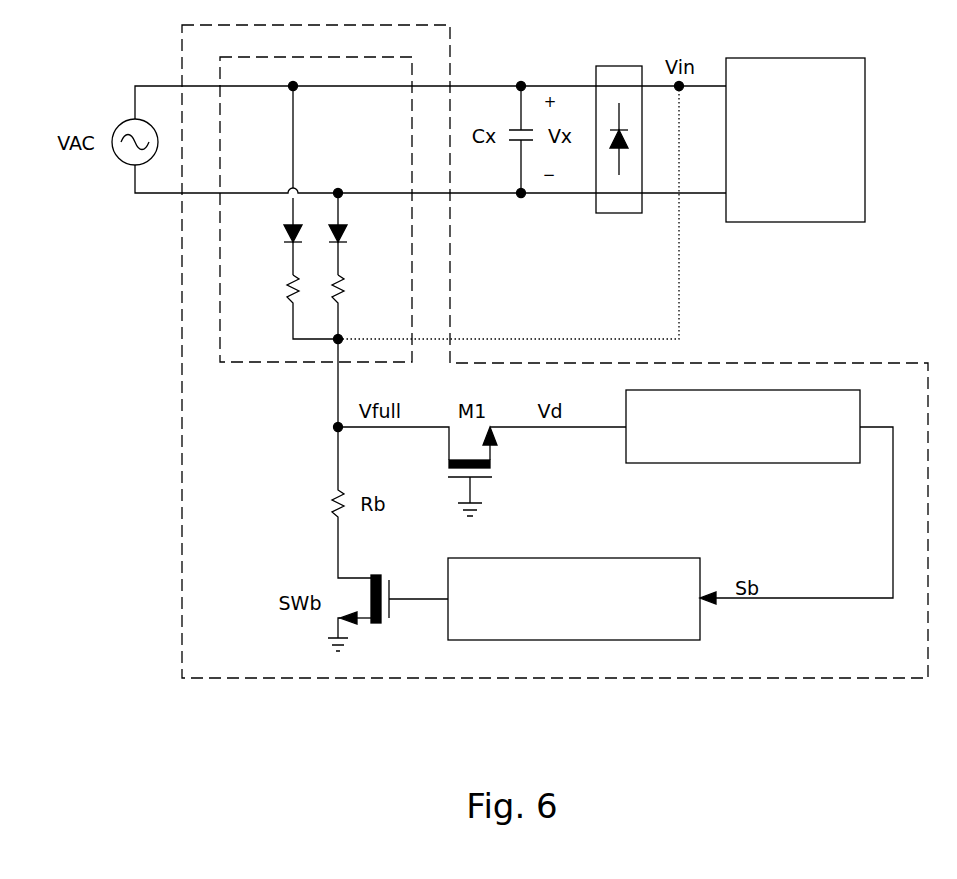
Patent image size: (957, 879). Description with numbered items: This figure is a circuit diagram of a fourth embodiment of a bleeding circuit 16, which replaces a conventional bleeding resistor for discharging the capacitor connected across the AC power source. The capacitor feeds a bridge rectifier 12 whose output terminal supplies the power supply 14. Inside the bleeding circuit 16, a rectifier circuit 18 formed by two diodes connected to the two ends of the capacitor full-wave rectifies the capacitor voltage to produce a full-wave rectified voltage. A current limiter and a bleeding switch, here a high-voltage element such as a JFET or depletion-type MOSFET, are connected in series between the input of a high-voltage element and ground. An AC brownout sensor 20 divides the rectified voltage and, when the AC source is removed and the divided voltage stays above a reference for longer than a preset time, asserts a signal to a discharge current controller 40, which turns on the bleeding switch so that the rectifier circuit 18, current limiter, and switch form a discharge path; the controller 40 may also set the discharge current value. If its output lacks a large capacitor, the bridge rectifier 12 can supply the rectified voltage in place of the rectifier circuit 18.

The bridge rectifier 12 is at (622, 213).
The power supply 14 is at (866, 134).
The bleeding circuit 16 is at (182, 395).
The rectifier circuit 18 is at (263, 362).
The AC brownout sensor 20 is at (745, 463).
The discharge current controller 40 is at (572, 557).